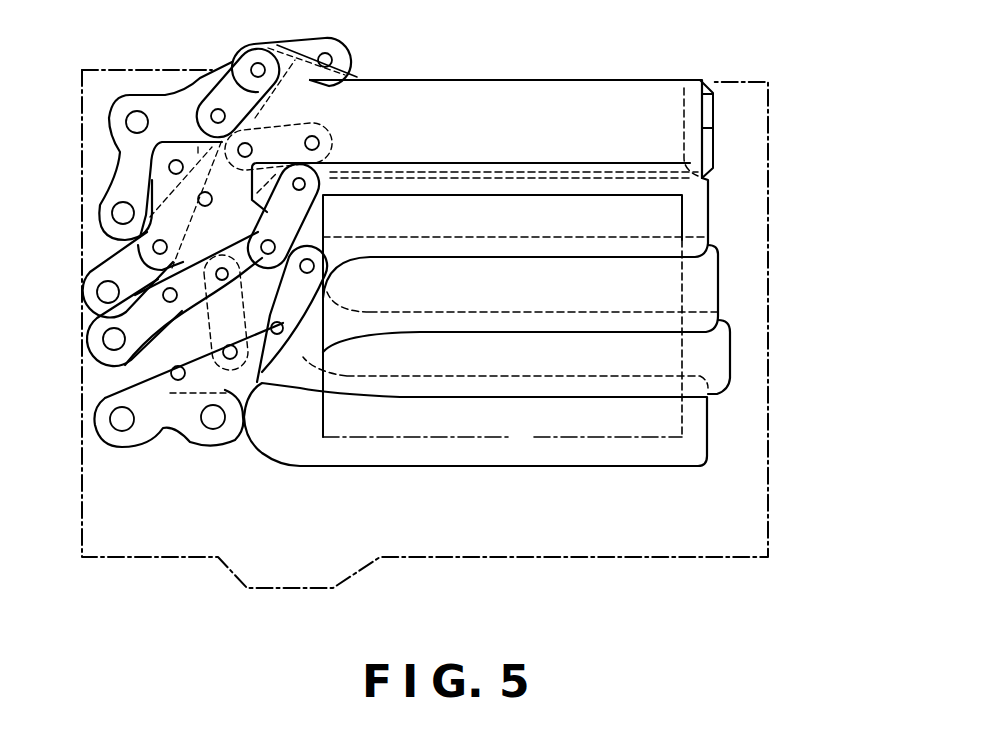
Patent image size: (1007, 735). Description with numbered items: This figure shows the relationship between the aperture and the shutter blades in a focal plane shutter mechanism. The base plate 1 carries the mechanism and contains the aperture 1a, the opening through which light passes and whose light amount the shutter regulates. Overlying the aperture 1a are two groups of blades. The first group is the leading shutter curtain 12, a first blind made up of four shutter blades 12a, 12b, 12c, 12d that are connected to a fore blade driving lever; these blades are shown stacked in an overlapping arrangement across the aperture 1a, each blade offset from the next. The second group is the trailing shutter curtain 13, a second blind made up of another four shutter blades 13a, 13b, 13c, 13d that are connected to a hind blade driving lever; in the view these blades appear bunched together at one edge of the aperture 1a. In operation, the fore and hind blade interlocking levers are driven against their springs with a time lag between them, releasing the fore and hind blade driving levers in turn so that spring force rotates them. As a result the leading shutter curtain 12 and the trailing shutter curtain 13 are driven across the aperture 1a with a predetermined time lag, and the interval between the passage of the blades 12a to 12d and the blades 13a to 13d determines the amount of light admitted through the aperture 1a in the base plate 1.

The base plate 1 is at (445, 540).
The aperture 1a is at (534, 437).
The leading shutter curtain 12 is at (564, 319).
The shutter blade 12a is at (540, 424).
The shutter blade 12b is at (731, 352).
The shutter blade 12c is at (720, 282).
The shutter blade 12d is at (710, 218).
The trailing shutter curtain 13 is at (568, 127).
The shutter blade 13a is at (714, 104).
The shutter blade 13b is at (770, 148).
The shutter blade 13c is at (716, 86).
The shutter blade 13d is at (714, 128).